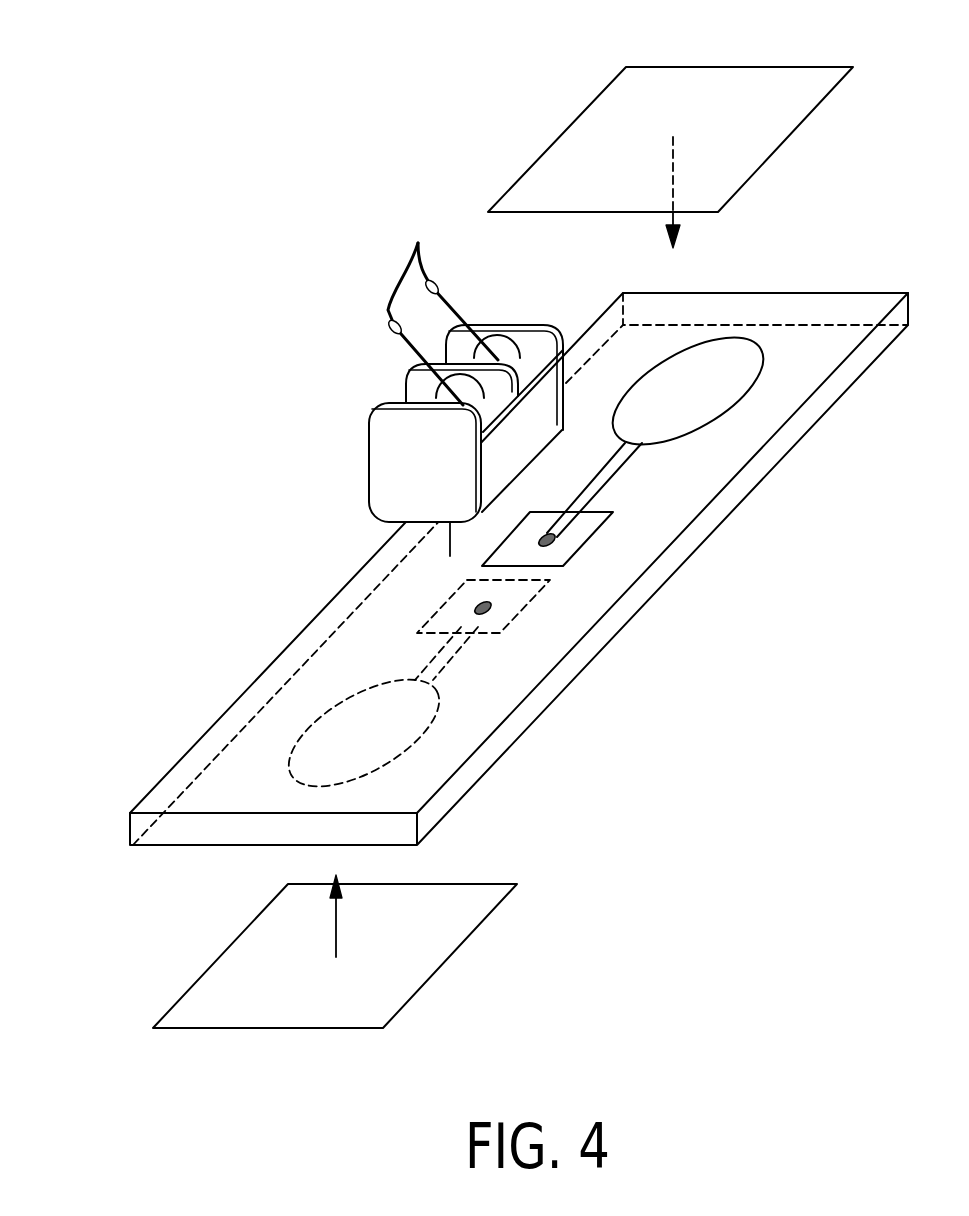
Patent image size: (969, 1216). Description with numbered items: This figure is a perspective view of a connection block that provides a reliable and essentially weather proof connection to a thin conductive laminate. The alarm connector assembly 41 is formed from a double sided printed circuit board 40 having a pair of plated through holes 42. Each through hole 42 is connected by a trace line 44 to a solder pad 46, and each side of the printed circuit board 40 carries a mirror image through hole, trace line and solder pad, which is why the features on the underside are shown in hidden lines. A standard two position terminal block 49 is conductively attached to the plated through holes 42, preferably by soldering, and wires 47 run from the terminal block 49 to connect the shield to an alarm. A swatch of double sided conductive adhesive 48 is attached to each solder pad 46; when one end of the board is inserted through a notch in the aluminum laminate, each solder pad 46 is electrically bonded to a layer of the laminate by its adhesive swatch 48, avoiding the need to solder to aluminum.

The double sided printed circuit board 40 is at (502, 692).
The alarm connector assembly 41 is at (621, 722).
The plated through holes 42 is at (486, 608).
The trace line 44 is at (613, 482).
The solder pad 46 is at (737, 375).
The wires 47 is at (442, 308).
The double sided conductive adhesive swatch 48 is at (717, 88).
The two position terminal block 49 is at (418, 432).